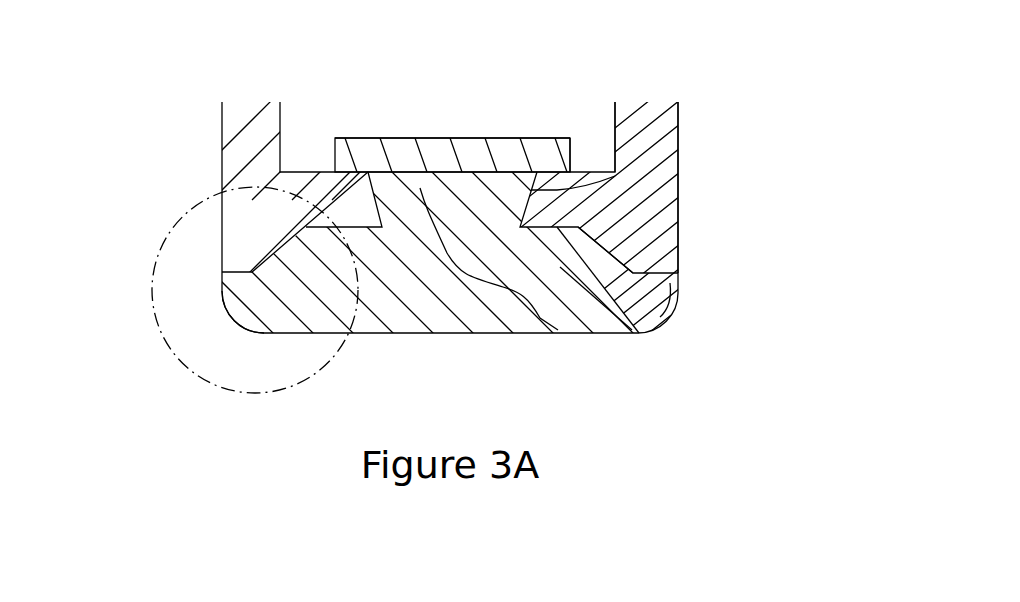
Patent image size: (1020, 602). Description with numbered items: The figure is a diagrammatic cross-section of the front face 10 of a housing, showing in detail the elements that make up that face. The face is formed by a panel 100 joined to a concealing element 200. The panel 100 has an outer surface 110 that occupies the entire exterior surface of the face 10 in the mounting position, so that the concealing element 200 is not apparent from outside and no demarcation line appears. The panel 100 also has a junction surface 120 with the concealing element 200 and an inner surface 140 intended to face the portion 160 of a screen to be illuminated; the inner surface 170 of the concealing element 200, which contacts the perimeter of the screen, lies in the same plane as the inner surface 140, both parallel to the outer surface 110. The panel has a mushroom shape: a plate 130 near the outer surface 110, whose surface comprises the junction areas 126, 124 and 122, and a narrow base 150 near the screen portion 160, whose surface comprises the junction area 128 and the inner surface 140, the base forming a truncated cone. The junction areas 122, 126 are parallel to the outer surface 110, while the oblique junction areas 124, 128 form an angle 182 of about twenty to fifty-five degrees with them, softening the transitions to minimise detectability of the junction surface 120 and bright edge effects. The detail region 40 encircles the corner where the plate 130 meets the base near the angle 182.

The face 10 is at (132, 118).
The detail region 40 is at (158, 332).
The panel 100 is at (404, 313).
The outer surface 110 is at (503, 338).
The junction surface 120 is at (618, 226).
The junction area 122 is at (666, 308).
The oblique junction area 124 is at (625, 243).
The junction area 126 is at (560, 267).
The oblique junction area 128 is at (655, 160).
The plate 130 is at (262, 318).
The inner surface 140 is at (447, 138).
The narrow base 150 is at (558, 330).
The portion of a screen 160 is at (487, 158).
The inner surface of the concealing element 170 is at (593, 170).
The angle 182 is at (352, 212).
The concealing element 200 is at (655, 187).